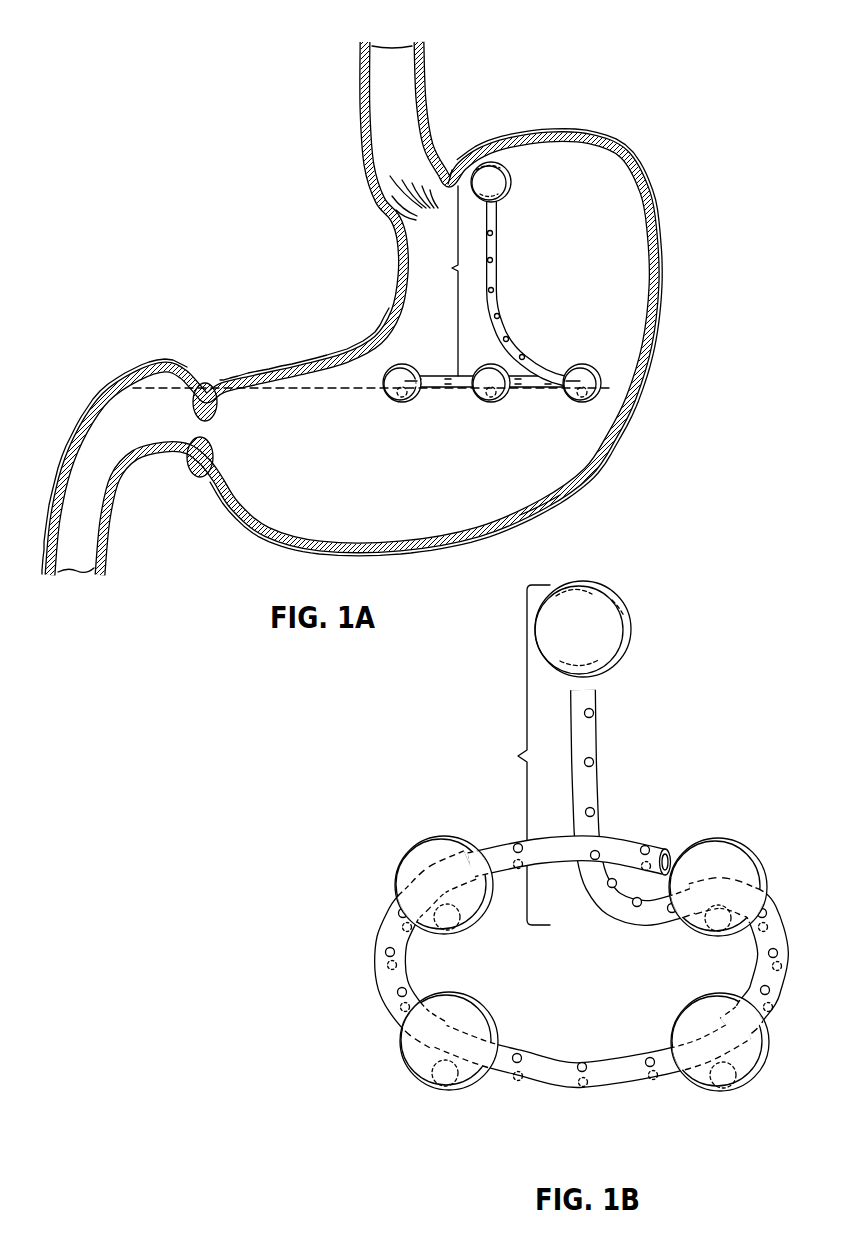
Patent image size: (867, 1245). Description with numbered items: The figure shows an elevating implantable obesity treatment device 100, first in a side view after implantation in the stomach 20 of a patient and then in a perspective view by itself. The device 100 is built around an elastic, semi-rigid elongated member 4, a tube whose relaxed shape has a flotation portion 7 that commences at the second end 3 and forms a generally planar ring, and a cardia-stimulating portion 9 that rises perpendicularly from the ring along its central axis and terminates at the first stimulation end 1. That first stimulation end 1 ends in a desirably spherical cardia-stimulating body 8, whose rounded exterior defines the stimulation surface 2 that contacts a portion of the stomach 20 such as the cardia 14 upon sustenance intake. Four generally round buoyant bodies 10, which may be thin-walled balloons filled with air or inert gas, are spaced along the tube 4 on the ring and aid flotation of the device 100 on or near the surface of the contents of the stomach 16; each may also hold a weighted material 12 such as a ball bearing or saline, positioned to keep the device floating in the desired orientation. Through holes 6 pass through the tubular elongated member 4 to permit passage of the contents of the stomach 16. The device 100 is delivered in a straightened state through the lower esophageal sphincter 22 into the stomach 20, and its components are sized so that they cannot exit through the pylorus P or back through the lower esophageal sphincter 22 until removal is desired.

In FIG. 1A, the first stimulation end 1 is at (515, 149).
In FIG. 1B, the first stimulation end 1 is at (602, 603).
In FIG. 1A, the stimulation surface 2 is at (487, 160).
In FIG. 1B, the stimulation surface 2 is at (595, 580).
In FIG. 1B, the second end 3 is at (672, 850).
In FIG. 1A, the elongated member 4 is at (498, 245).
In FIG. 1B, the elongated member 4 is at (598, 743).
In FIG. 1A, the through holes 6 is at (492, 292).
In FIG. 1B, the through holes 6 is at (594, 812).
In FIG. 1A, the flotation portion 7 is at (372, 301).
In FIG. 1B, the flotation portion 7 is at (575, 933).
In FIG. 1A, the cardia-stimulating body 8 is at (507, 186).
In FIG. 1B, the cardia-stimulating body 8 is at (607, 633).
In FIG. 1A, the cardia-stimulating portion 9 is at (444, 281).
In FIG. 1B, the cardia-stimulating portion 9 is at (521, 755).
In FIG. 1A, the buoyant bodies 10 is at (584, 366).
In FIG. 1B, the buoyant bodies 10 is at (569, 907).
In FIG. 1B, the weighted material 12 is at (562, 1014).
In FIG. 1A, the cardia 14 is at (454, 176).
In FIG. 1A, the contents of the stomach 16 is at (544, 428).
In FIG. 1A, the stomach 20 is at (660, 322).
In FIG. 1A, the lower esophageal sphincter 22 is at (382, 212).
In FIG. 1A, the implantable obesity treatment device 100 is at (434, 246).
In FIG. 1B, the implantable obesity treatment device 100 is at (584, 853).
In FIG. 1A, the pylorus P is at (199, 482).